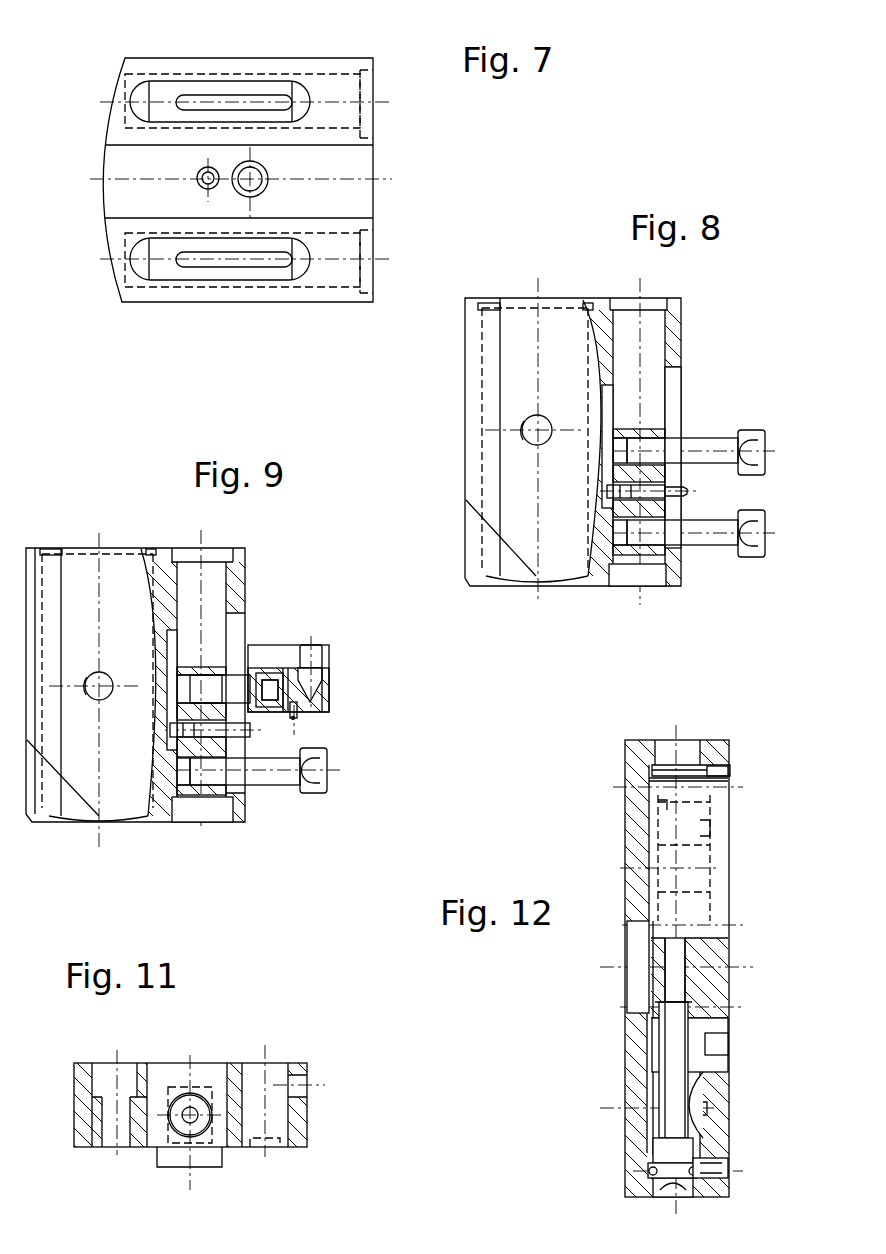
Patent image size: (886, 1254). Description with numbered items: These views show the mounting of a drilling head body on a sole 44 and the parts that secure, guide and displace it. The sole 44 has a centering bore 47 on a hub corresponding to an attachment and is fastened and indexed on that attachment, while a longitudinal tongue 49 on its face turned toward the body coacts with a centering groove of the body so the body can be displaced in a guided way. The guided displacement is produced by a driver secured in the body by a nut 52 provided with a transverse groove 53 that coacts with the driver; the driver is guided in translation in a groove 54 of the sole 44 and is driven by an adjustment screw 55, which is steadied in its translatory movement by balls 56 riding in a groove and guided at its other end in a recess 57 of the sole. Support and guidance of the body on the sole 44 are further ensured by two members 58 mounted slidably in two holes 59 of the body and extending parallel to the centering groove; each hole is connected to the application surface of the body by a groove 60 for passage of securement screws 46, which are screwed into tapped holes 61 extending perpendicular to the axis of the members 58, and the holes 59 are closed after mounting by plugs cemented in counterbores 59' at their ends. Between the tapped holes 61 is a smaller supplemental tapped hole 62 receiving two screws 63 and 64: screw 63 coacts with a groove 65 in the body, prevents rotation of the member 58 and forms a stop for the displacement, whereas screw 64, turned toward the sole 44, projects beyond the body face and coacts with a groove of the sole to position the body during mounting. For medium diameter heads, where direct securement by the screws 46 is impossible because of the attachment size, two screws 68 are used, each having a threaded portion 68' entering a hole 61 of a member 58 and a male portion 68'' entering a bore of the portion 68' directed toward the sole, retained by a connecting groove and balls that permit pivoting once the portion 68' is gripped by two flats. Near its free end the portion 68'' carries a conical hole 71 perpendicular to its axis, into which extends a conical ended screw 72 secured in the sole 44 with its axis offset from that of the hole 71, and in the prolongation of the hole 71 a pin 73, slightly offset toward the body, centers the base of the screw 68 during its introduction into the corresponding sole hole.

In FIG. 7, the sole 44 is at (240, 65).
In FIG. 11, the sole 44 is at (83, 1143).
In FIG. 12, the sole 44 is at (634, 880).
In FIG. 8, the screws 46 is at (771, 486).
In FIG. 12, the centering bore 47 is at (632, 925).
In FIG. 11, the longitudinal tongue 49 is at (197, 1158).
In FIG. 12, the nut 52 is at (704, 1059).
In FIG. 12, the transverse groove 53 is at (715, 1046).
In FIG. 12, the groove 54 is at (653, 1092).
In FIG. 12, the adjustment screw 55 is at (673, 1108).
In FIG. 12, the balls 56 is at (637, 1168).
In FIG. 12, the recess 57 is at (692, 995).
In FIG. 8, the members 58 is at (635, 557).
In FIG. 9, the members 58 is at (227, 788).
In FIG. 7, the holes 59 is at (242, 149).
In FIG. 8, the holes 59 is at (661, 289).
In FIG. 7, the counterbores 59' is at (254, 179).
In FIG. 8, the counterbores 59' is at (659, 599).
In FIG. 9, the counterbores 59' is at (217, 692).
In FIG. 7, the groove 60 is at (138, 243).
In FIG. 8, the groove 60 is at (673, 383).
In FIG. 8, the tapped holes 61 is at (619, 452).
In FIG. 8, the supplemental tapped hole 62 is at (640, 485).
In FIG. 8, the screw 63 is at (609, 492).
In FIG. 8, the screw 64 is at (688, 495).
In FIG. 7, the groove 65 is at (180, 270).
In FIG. 8, the groove 65 is at (607, 393).
In FIG. 9, the screws 68 is at (288, 628).
In FIG. 9, the threaded portion 68' is at (230, 659).
In FIG. 9, the male portion 68'' is at (368, 690).
In FIG. 9, the conical hole 71 is at (330, 675).
In FIG. 9, the conical ended screw 72 is at (315, 653).
In FIG. 9, the pin 73 is at (298, 718).